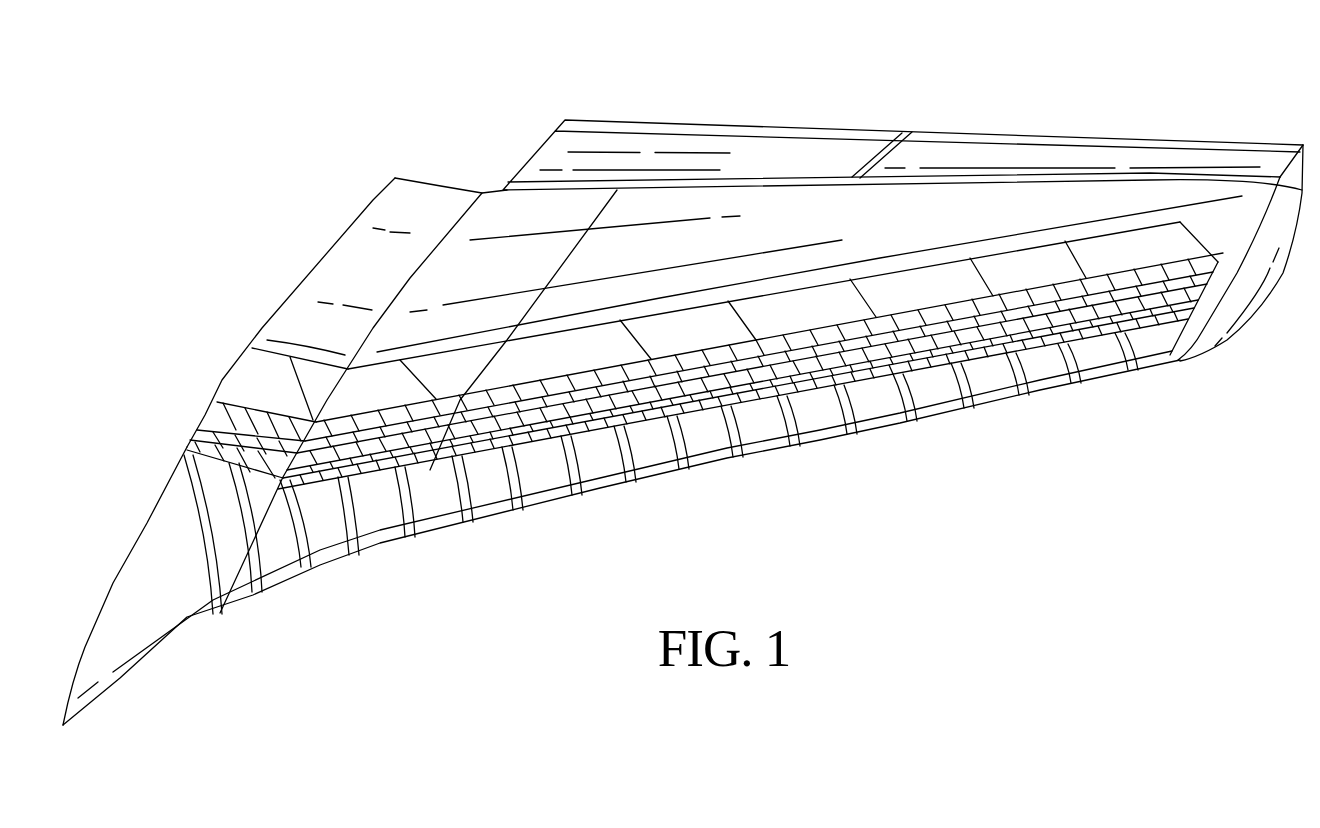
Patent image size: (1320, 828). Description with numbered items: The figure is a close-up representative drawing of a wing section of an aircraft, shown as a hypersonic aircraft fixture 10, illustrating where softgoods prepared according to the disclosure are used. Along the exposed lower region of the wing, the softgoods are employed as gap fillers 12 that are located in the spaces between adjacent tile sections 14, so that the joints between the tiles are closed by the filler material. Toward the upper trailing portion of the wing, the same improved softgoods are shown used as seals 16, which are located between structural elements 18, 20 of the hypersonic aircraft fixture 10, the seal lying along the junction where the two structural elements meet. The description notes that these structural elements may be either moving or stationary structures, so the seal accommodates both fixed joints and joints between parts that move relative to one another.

The hypersonic aircraft fixture 10 is at (997, 92).
The gap fillers 12 is at (628, 497).
The tile sections 14 is at (598, 487).
The seals 16 is at (748, 182).
The structural element 18 is at (440, 288).
The structural element 20 is at (852, 150).